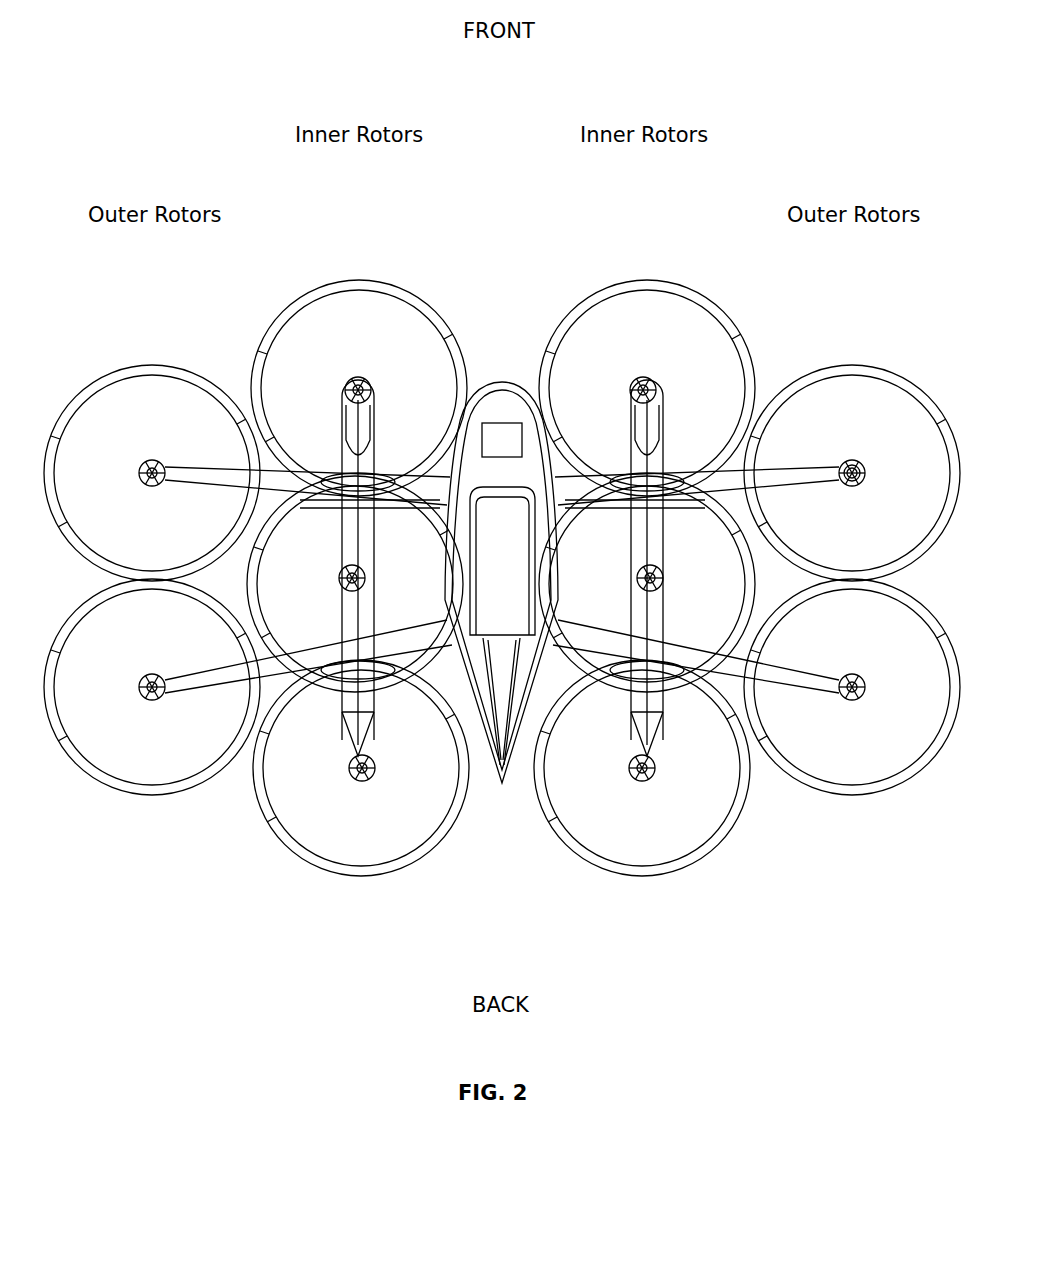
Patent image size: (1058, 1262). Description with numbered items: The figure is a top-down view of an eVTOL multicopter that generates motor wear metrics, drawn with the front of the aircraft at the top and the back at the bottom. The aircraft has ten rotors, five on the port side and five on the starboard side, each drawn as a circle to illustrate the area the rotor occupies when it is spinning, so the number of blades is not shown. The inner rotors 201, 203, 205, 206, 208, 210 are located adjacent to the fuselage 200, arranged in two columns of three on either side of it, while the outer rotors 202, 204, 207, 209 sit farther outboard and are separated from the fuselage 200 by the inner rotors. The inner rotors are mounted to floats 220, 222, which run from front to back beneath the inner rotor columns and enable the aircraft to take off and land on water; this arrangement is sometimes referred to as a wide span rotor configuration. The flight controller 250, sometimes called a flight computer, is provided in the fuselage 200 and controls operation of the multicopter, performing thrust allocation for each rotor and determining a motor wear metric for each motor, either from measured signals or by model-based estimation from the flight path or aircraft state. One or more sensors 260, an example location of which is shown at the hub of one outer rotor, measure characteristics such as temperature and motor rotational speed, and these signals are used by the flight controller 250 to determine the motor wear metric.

The fuselage 200 is at (487, 383).
The inner rotor 201 is at (647, 280).
The outer rotor 202 is at (792, 382).
The inner rotor 203 is at (622, 470).
The outer rotor 204 is at (851, 797).
The inner rotor 205 is at (642, 878).
The inner rotor 206 is at (361, 878).
The outer rotor 207 is at (152, 796).
The inner rotor 208 is at (384, 470).
The outer rotor 209 is at (152, 366).
The inner rotor 210 is at (359, 280).
The float 220 is at (683, 425).
The float 222 is at (341, 428).
The flight controller 250 is at (502, 422).
The sensor 260 is at (860, 463).